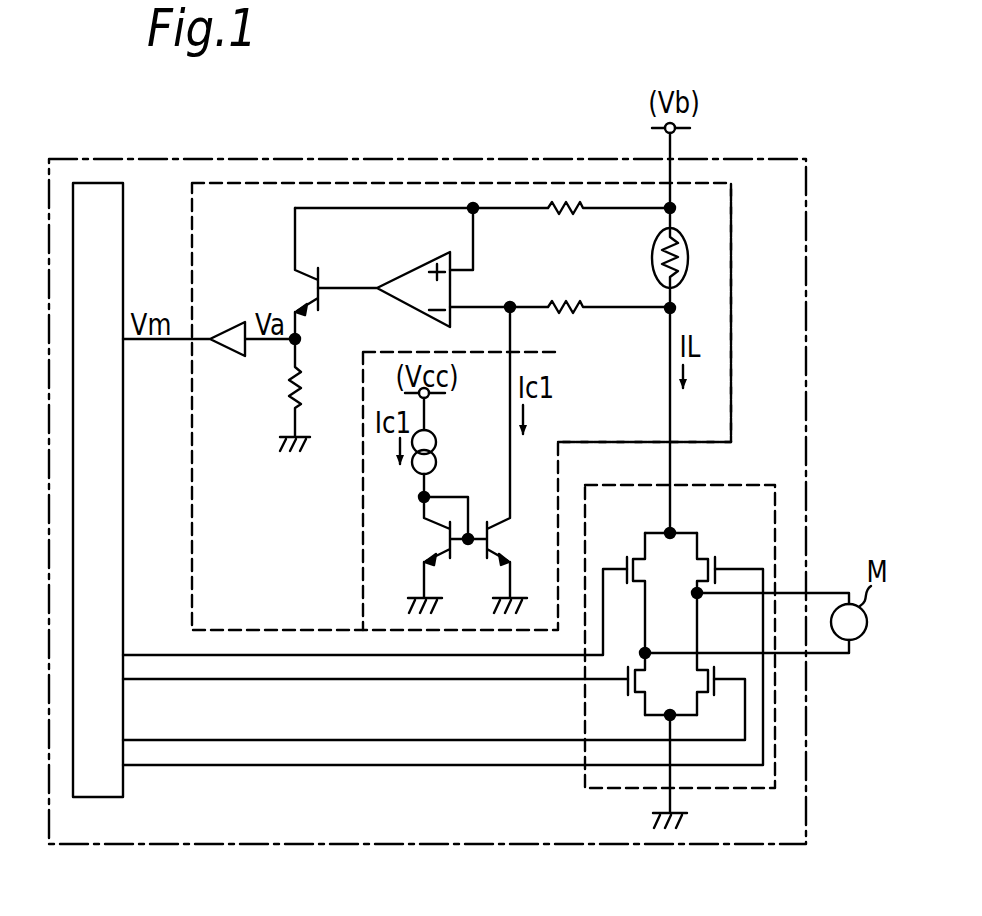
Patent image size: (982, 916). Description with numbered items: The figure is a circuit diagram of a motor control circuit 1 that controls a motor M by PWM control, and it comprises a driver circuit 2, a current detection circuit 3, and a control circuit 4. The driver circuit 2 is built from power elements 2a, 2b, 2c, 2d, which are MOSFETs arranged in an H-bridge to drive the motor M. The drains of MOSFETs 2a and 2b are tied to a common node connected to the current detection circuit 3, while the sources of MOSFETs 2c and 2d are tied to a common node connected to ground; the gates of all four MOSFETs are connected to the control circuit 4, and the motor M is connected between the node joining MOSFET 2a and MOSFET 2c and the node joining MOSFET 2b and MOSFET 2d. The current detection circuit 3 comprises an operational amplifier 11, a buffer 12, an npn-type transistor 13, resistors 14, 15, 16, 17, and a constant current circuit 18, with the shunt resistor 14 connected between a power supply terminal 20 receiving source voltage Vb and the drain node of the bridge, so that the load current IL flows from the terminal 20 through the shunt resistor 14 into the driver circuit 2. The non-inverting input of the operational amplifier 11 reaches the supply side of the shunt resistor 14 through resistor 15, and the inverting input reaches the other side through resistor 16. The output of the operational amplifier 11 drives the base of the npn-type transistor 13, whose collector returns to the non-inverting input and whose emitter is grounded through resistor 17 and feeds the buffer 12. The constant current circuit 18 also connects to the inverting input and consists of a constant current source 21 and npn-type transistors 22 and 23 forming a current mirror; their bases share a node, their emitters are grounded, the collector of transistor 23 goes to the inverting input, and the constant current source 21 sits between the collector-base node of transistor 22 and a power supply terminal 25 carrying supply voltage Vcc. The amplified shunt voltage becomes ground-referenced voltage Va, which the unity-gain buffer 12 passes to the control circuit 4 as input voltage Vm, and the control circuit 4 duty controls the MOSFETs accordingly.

The motor control circuit 1 is at (492, 157).
The driver circuit 2 is at (581, 701).
The MOSFET 2a is at (627, 565).
The MOSFET 2b is at (715, 565).
The MOSFET 2c is at (627, 687).
The MOSFET 2d is at (716, 688).
The current detection circuit 3 is at (733, 228).
The control circuit 4 is at (123, 228).
The operational amplifier 11 is at (402, 303).
The buffer 12 is at (222, 324).
The npn-type transistor 13 is at (319, 276).
The shunt resistor 14 is at (652, 256).
The resistor 15 is at (563, 213).
The resistor 16 is at (577, 313).
The resistor 17 is at (290, 384).
The constant current circuit 18 is at (362, 524).
The power supply terminal 20 is at (677, 134).
The constant current source 21 is at (437, 460).
The npn-type transistor 22 is at (428, 541).
The npn-type transistor 23 is at (503, 541).
The power supply terminal 25 is at (431, 398).